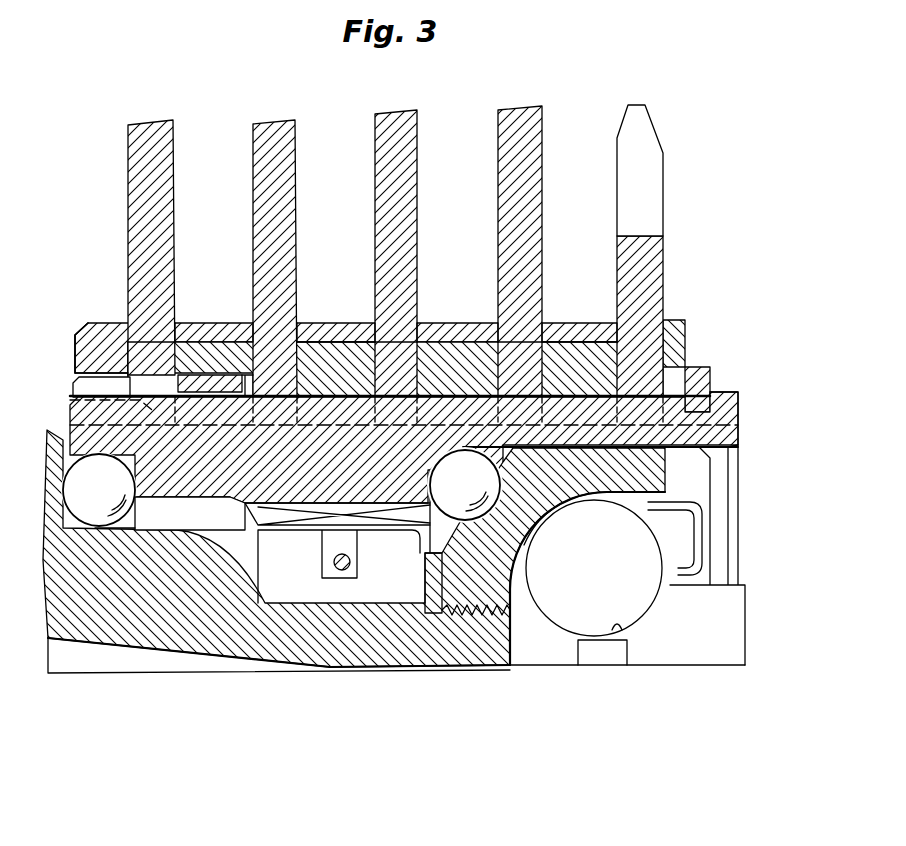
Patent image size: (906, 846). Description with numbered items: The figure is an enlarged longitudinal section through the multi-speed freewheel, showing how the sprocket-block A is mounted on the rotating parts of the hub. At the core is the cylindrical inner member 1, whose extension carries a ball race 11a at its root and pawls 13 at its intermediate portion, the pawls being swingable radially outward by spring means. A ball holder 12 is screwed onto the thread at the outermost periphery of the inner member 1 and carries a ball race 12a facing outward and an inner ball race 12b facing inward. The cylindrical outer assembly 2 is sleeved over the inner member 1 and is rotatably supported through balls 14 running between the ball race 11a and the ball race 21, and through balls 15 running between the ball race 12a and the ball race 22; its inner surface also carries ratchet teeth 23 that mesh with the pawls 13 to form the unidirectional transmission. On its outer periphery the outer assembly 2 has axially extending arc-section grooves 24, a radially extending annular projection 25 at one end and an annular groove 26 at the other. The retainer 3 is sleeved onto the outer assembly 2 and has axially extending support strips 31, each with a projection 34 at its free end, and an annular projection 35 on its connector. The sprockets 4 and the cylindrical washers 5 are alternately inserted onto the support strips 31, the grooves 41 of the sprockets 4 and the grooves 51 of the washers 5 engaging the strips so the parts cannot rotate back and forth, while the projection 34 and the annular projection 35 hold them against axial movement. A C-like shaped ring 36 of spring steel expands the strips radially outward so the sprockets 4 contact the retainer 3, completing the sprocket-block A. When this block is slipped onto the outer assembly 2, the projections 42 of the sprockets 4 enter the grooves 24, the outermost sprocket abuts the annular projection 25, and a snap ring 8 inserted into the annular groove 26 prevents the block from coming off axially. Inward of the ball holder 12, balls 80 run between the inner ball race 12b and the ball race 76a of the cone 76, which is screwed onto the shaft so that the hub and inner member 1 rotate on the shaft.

The inner member 1 is at (260, 655).
The outer assembly 2 is at (197, 504).
The retainer 3 is at (310, 338).
The sprockets 4 is at (175, 155).
The cylindrical washers 5 is at (233, 338).
The snap ring 8 is at (711, 367).
The ball race 11a is at (95, 523).
The ball holder 12 is at (463, 598).
The ball race 12a is at (524, 545).
The inner ball race 12b is at (540, 522).
The pawls 13 is at (372, 572).
The balls 14 is at (112, 524).
The balls 15 is at (500, 612).
The ball race 21 is at (132, 473).
The ball race 22 is at (432, 468).
The ratchet teeth 23 is at (303, 516).
The grooves 24 is at (72, 405).
The annular projection 25 is at (72, 345).
The annular groove 26 is at (722, 392).
The support strips 31 is at (433, 338).
The projection 34 is at (100, 338).
The annular projection 35 is at (680, 345).
The C-like shaped ring 36 is at (200, 340).
The grooves 41 is at (150, 342).
The projections 42 is at (75, 385).
The grooves 51 is at (558, 338).
The cone 76 is at (713, 653).
The ball race 76a is at (623, 628).
The balls 80 is at (640, 607).
The sprocket-block A is at (697, 346).